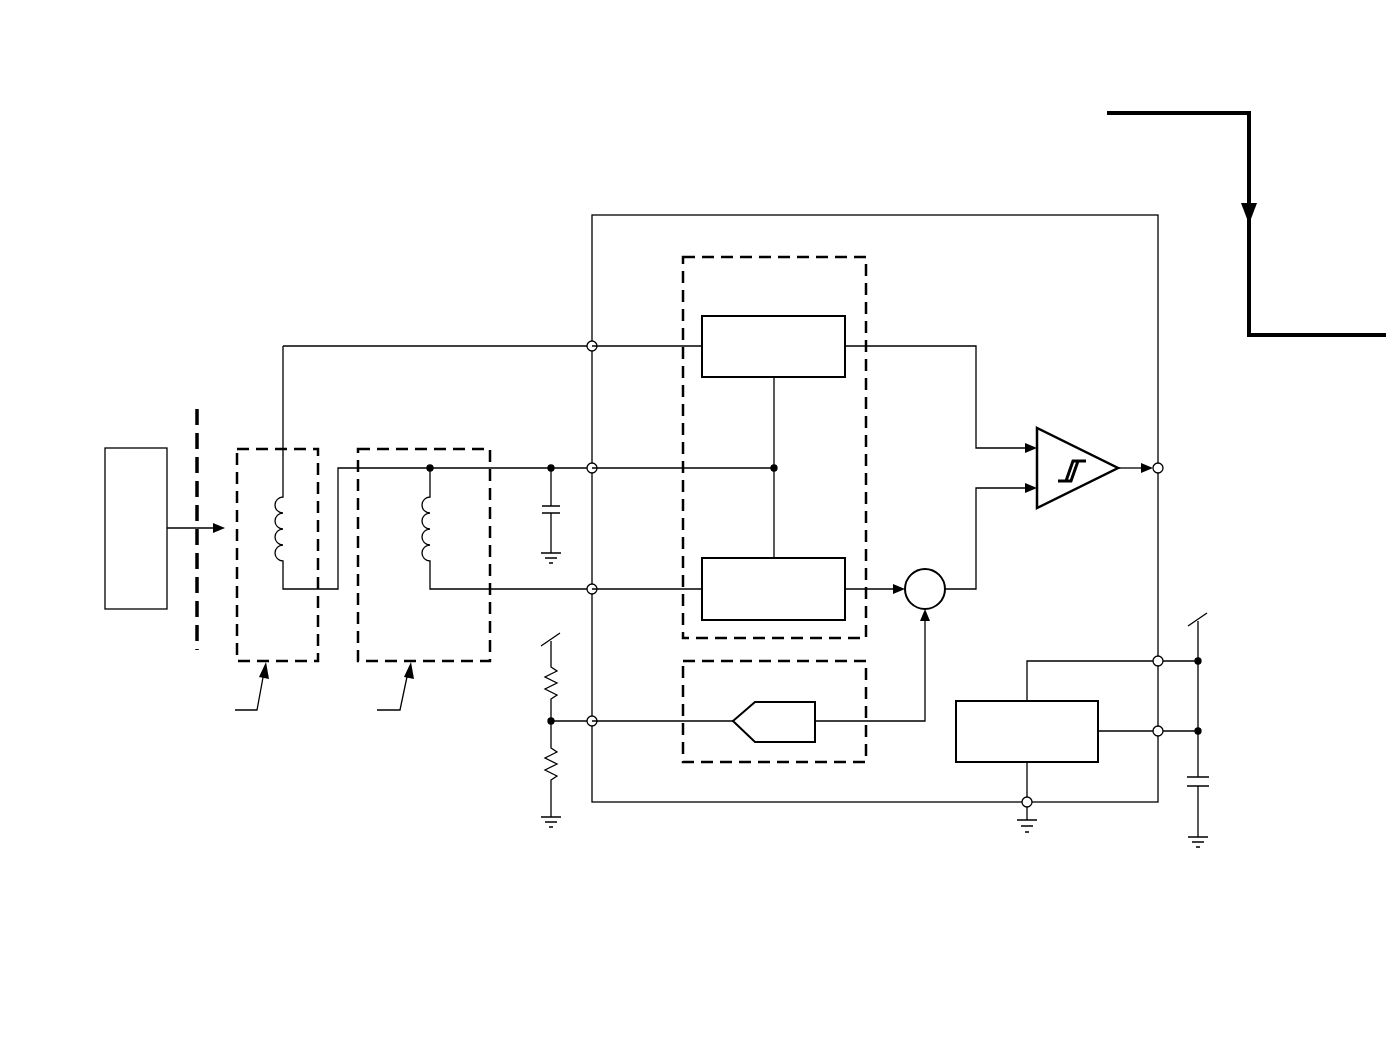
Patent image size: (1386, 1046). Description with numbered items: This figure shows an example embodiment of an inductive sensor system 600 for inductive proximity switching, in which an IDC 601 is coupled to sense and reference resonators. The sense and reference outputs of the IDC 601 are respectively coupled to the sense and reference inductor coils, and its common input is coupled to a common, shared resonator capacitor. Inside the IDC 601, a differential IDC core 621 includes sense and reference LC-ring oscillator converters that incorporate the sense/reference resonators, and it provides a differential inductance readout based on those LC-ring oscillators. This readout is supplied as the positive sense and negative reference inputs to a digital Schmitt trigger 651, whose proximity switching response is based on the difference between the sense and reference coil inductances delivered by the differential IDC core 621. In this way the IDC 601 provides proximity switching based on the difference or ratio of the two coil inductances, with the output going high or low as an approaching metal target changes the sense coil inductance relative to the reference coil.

The inductive sensor system 600 is at (281, 192).
The IDC 601 is at (971, 210).
The differential IDC core 621 is at (878, 310).
The digital Schmitt trigger 651 is at (1080, 442).